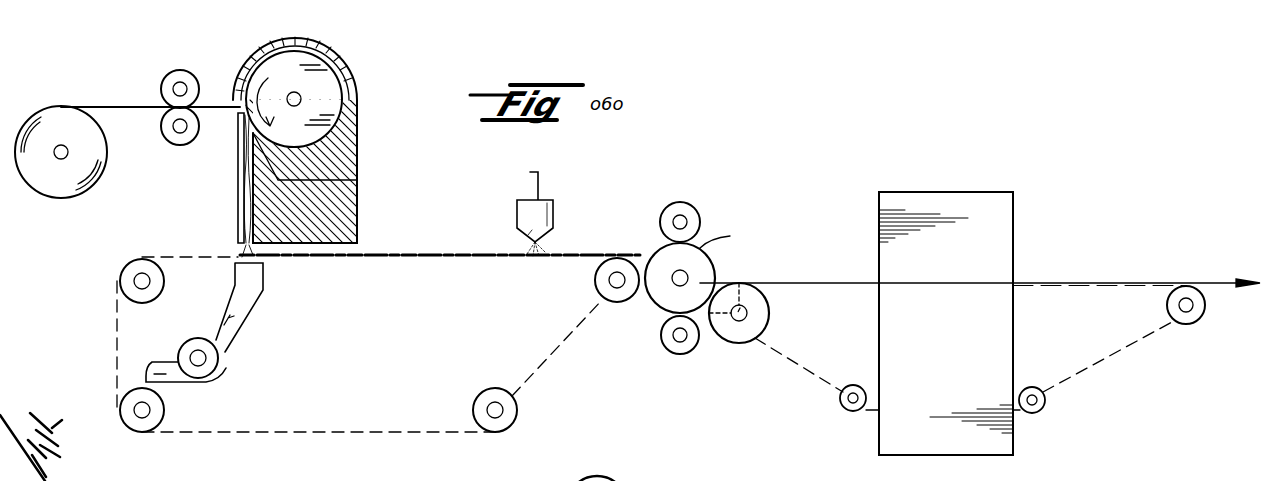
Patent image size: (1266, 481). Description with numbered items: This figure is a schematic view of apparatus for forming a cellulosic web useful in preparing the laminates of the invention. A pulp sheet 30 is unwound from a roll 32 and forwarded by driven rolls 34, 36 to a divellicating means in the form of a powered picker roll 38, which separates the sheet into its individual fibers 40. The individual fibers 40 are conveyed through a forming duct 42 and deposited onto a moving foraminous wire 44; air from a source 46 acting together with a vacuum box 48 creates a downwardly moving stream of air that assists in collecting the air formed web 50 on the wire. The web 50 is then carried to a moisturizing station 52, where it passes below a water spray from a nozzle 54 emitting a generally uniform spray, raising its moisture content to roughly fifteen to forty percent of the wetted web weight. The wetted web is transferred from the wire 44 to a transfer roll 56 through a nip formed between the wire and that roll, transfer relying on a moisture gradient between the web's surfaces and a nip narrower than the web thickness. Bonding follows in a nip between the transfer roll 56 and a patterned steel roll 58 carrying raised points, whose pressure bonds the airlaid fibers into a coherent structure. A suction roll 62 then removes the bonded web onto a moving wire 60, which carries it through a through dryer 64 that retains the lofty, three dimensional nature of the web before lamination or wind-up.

The pulp sheet 30 is at (128, 104).
The roll 32 is at (62, 195).
The driven roll 34 is at (205, 56).
The driven roll 36 is at (176, 141).
The picker roll 38 is at (323, 80).
The individual fibers 40 is at (244, 184).
The forming duct 42 is at (250, 218).
The foraminous wire 44 is at (198, 258).
The air source 46 is at (358, 180).
The vacuum box 48 is at (218, 353).
The air formed web 50 is at (286, 249).
The moisturizing station 52 is at (552, 192).
The nozzle 54 is at (544, 240).
The transfer roll 56 is at (706, 264).
The patterned steel roll 58 is at (668, 352).
The moving wire 60 is at (1120, 364).
The suction roll 62 is at (790, 272).
The through dryer 64 is at (983, 208).